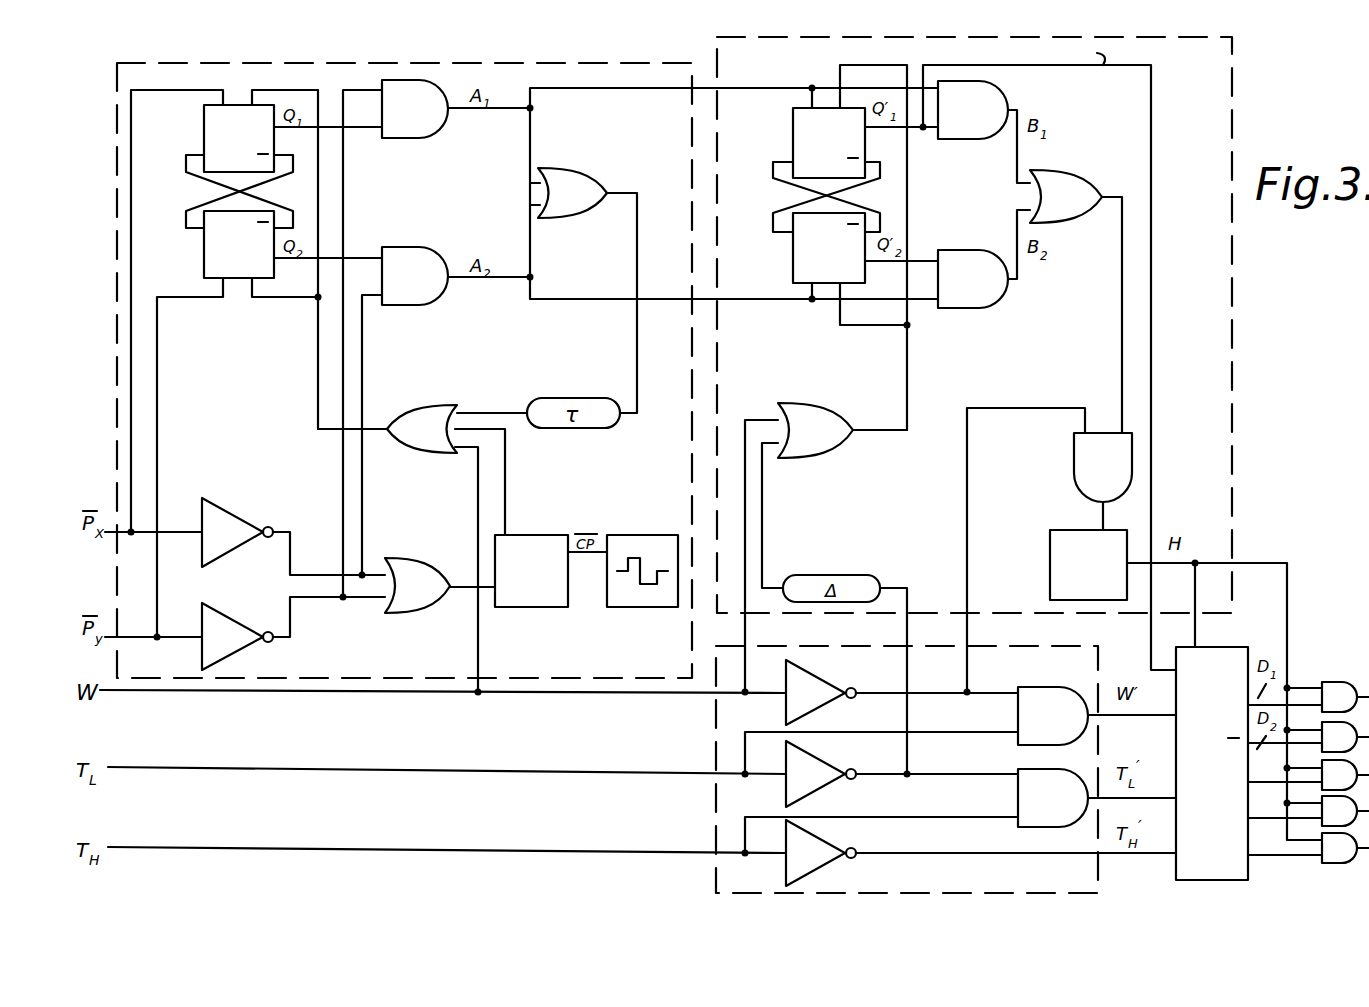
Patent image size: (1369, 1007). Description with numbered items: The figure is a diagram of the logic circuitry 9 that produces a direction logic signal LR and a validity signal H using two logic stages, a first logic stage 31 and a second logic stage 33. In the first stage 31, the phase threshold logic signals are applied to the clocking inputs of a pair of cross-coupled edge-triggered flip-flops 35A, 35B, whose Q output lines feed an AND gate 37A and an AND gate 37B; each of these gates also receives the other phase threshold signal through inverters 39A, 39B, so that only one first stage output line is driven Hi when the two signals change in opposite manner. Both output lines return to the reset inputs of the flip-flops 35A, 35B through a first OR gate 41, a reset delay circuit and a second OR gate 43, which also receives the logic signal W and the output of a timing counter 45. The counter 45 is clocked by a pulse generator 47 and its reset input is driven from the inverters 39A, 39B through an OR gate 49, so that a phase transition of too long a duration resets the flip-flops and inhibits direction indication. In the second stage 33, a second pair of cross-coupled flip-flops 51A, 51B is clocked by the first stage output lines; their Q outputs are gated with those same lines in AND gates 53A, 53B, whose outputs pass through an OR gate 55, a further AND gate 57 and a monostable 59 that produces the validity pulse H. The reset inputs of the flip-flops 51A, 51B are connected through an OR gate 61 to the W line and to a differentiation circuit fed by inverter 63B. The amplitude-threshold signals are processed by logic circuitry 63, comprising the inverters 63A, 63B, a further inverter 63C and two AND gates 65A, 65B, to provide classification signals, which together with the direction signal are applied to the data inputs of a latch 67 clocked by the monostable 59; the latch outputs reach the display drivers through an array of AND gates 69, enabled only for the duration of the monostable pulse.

The logic circuitry 9 is at (377, 57).
The first logic stage 31 is at (592, 63).
The second logic stage 33 is at (1222, 66).
The cross-coupled edge-triggered flip-flop 35A is at (204, 118).
The cross-coupled edge-triggered flip-flop 35B is at (204, 259).
The AND gate 37A is at (425, 136).
The AND gate 37B is at (425, 303).
The inverter 39A is at (228, 509).
The inverter 39B is at (238, 601).
The first OR gate 41 is at (580, 178).
The second OR gate 43 is at (422, 412).
The timing counter 45 is at (528, 535).
The pulse generator 47 is at (640, 535).
The OR gate 49 is at (415, 567).
The cross-coupled edge-triggered flip-flop 51A is at (793, 134).
The cross-coupled edge-triggered flip-flop 51B is at (793, 267).
The AND gate 53A is at (947, 138).
The AND gate 53B is at (990, 307).
The OR gate 55 is at (1064, 183).
The AND gate 57 is at (1078, 450).
The monostable 59 is at (1052, 563).
The OR gate 61 is at (826, 413).
The logic circuitry 63 is at (724, 722).
The inverter 63A is at (823, 678).
The inverter 63B is at (829, 765).
The inverter 63C is at (829, 843).
The AND gate 65A is at (1071, 687).
The AND gate 65B is at (1018, 798).
The latch 67 is at (1248, 647).
The array of AND gates 69 is at (1338, 682).